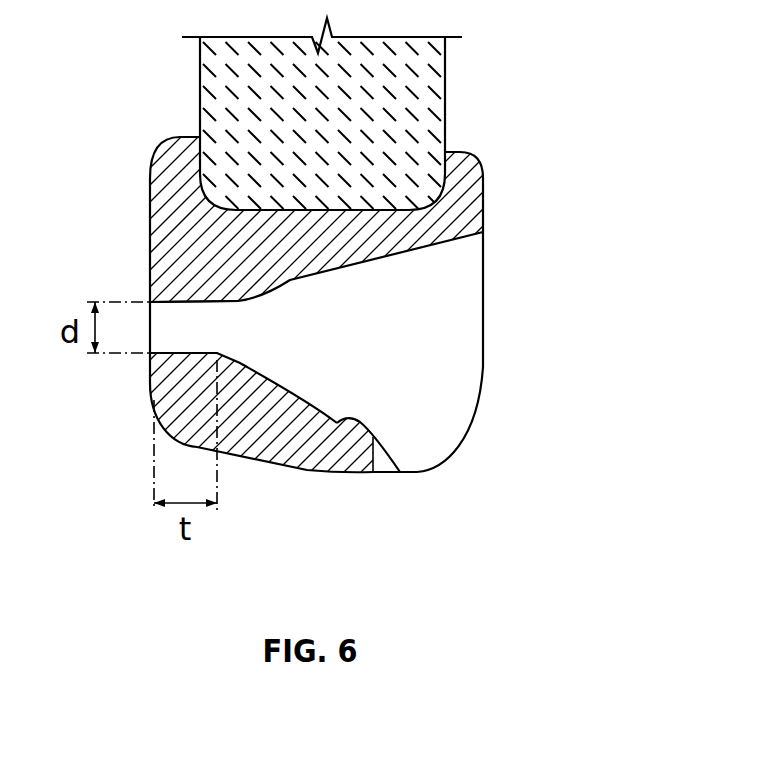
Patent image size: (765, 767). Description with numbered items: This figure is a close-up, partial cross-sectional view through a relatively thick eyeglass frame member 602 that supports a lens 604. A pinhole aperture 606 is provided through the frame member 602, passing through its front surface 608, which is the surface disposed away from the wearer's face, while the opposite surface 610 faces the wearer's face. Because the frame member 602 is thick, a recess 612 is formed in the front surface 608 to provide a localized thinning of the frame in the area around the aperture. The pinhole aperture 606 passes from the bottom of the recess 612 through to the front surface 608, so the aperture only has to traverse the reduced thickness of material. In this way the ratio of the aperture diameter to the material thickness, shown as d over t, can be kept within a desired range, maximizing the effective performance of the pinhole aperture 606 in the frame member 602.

The frame member 602 is at (482, 156).
The lens 604 is at (445, 52).
The pinhole aperture 606 is at (173, 351).
The front surface 608 is at (150, 184).
The surface 610 is at (483, 367).
The recess 612 is at (400, 472).